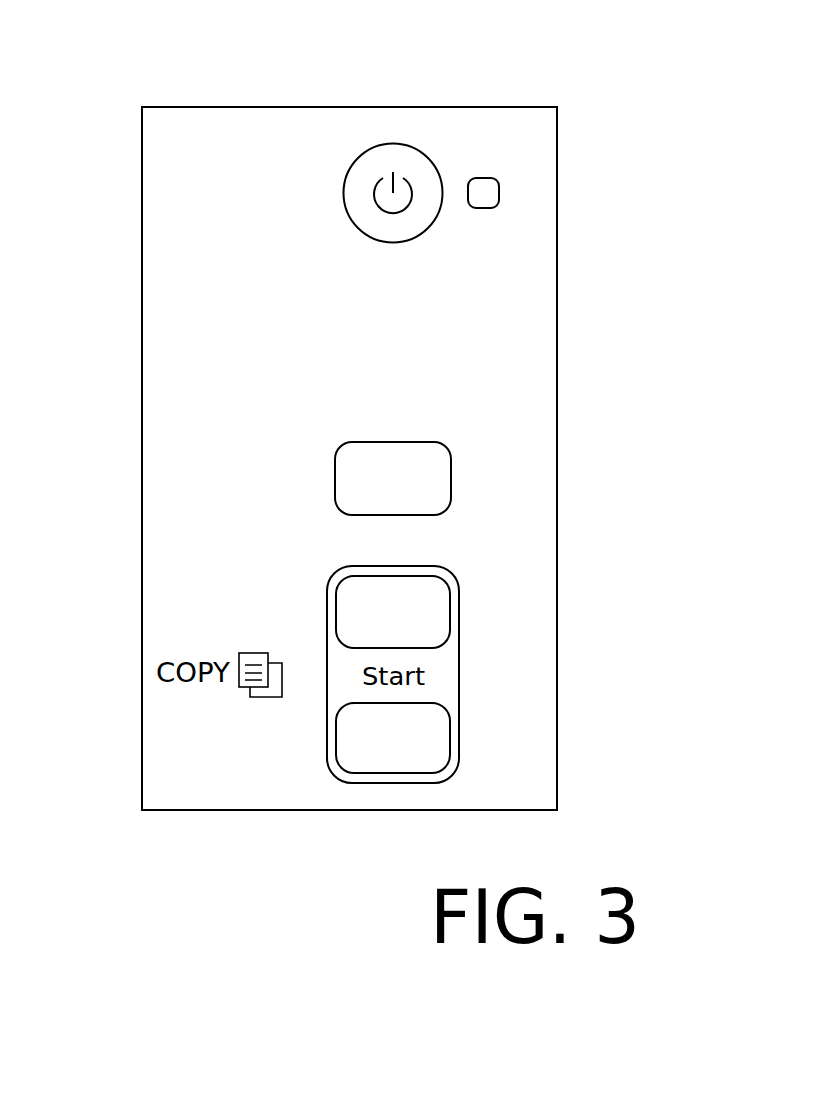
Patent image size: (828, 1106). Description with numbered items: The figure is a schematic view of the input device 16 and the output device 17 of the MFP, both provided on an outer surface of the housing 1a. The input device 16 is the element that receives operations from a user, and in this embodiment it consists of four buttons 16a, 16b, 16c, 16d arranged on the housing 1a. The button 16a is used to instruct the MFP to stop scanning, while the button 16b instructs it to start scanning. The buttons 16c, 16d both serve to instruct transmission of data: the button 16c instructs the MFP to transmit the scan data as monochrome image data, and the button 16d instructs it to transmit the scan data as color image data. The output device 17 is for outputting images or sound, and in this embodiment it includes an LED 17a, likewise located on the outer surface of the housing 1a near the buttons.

The housing 1a is at (510, 290).
The input device 16 is at (370, 137).
The button 16a is at (347, 217).
The button 16b is at (335, 492).
The button 16c is at (336, 624).
The button 16d is at (336, 750).
The output device 17 is at (487, 158).
The LED 17a is at (503, 193).